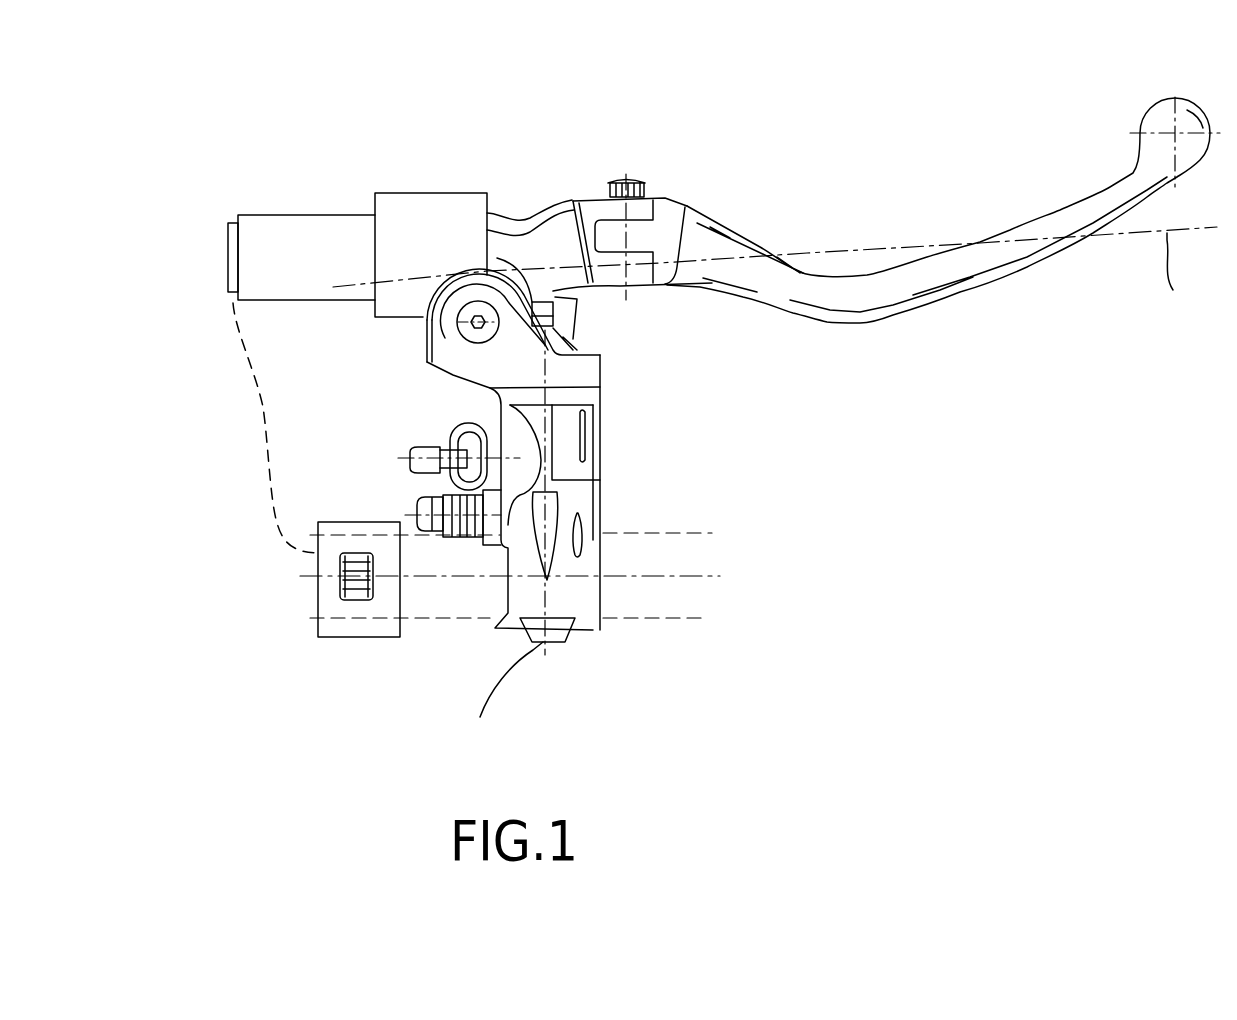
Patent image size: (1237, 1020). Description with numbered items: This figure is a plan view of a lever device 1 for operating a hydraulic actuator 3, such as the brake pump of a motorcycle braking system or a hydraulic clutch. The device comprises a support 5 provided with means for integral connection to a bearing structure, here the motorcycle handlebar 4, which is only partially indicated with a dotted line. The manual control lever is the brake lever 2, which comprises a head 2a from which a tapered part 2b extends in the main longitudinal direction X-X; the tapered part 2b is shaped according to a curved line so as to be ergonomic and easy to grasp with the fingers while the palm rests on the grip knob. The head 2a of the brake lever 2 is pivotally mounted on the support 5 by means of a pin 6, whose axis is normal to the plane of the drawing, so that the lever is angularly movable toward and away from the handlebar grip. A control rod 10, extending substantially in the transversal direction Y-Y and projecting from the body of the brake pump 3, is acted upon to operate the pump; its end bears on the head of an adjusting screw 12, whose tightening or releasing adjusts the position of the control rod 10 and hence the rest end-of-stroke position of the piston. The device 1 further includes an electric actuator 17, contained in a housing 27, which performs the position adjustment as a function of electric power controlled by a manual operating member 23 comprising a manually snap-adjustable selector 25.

The lever device 1 is at (599, 121).
The brake lever 2 is at (555, 195).
The head 2a is at (507, 245).
The tapered part 2b is at (748, 245).
The hydraulic actuator 3 is at (583, 470).
The motorcycle handlebar 4 is at (660, 617).
The support 5 is at (612, 390).
The pin 6 is at (465, 330).
The control rod 10 is at (567, 319).
The adjusting screw 12 is at (556, 297).
The electric actuator 17 is at (317, 237).
The manual operating member 23 is at (360, 610).
The selector 25 is at (377, 580).
The housing 27 is at (263, 222).